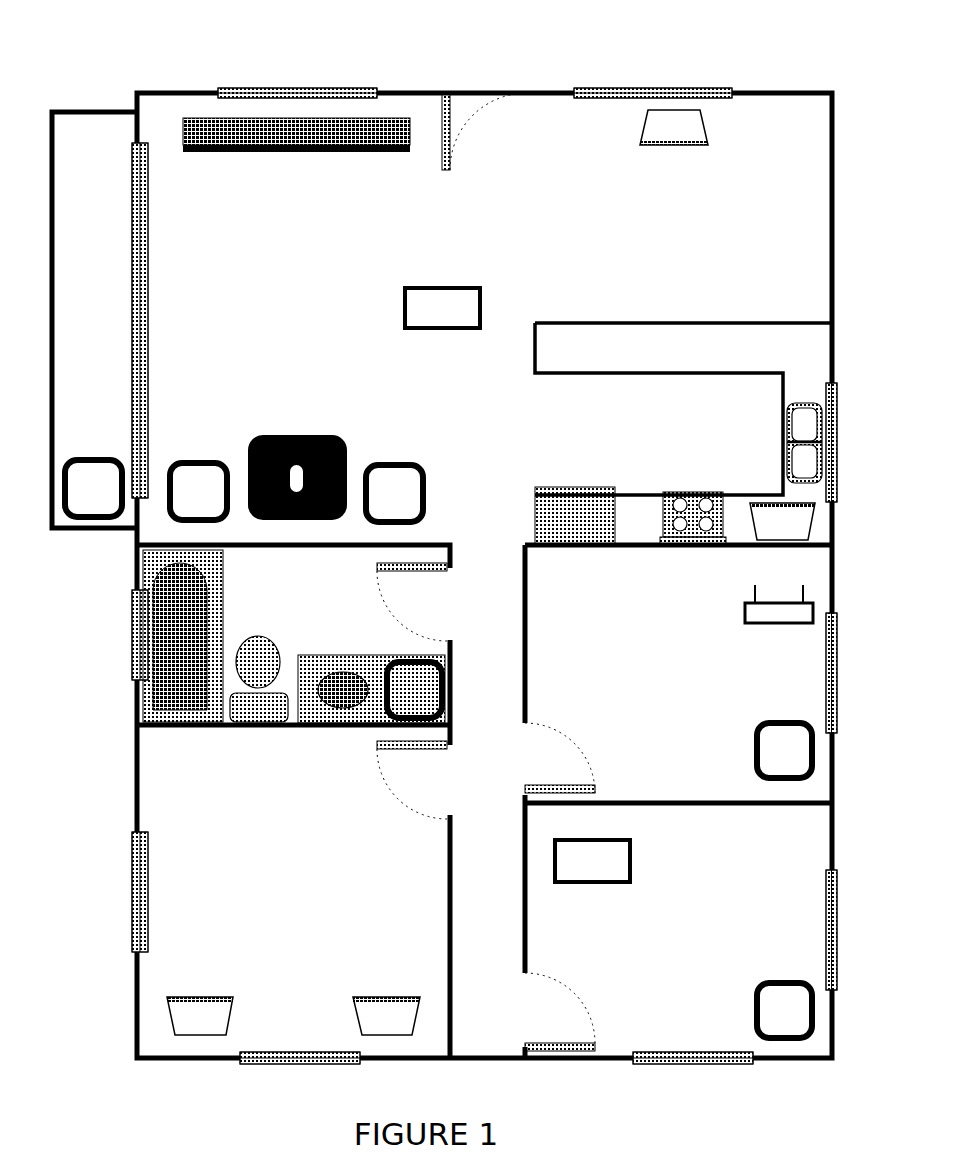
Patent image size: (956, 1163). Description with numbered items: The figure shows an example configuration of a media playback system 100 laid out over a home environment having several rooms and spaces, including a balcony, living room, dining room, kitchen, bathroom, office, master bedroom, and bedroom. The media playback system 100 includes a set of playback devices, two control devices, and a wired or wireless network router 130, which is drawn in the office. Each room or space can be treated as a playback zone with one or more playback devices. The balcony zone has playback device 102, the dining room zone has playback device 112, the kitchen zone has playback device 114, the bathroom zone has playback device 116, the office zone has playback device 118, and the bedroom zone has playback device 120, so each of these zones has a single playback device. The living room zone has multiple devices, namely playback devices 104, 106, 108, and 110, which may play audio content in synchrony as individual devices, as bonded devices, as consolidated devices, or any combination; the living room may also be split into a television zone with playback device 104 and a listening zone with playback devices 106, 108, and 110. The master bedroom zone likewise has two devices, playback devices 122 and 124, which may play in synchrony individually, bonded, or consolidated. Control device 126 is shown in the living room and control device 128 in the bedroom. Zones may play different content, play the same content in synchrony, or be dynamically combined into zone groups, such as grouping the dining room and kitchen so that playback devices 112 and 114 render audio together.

The media playback system 100 is at (531, 53).
The playback device 102 is at (75, 500).
The playback device 104 is at (279, 142).
The playback device 106 is at (180, 503).
The playback device 108 is at (376, 505).
The playback device 110 is at (280, 462).
The playback device 112 is at (656, 138).
The playback device 114 is at (764, 534).
The playback device 116 is at (396, 701).
The playback device 118 is at (766, 762).
The playback device 120 is at (766, 1022).
The playback device 122 is at (182, 1028).
The playback device 124 is at (368, 1028).
The control device 126 is at (424, 319).
The control device 128 is at (574, 872).
The network router 130 is at (743, 615).